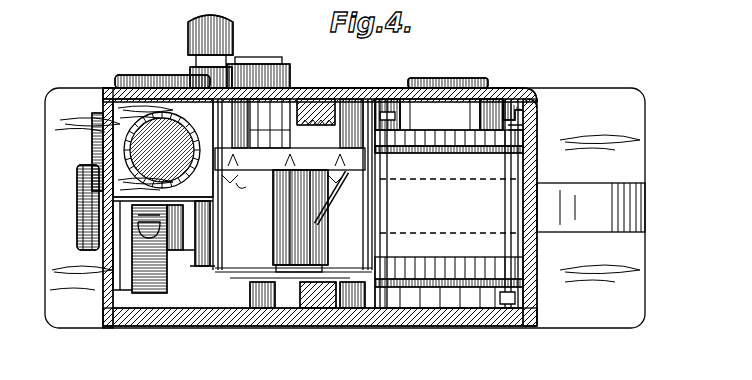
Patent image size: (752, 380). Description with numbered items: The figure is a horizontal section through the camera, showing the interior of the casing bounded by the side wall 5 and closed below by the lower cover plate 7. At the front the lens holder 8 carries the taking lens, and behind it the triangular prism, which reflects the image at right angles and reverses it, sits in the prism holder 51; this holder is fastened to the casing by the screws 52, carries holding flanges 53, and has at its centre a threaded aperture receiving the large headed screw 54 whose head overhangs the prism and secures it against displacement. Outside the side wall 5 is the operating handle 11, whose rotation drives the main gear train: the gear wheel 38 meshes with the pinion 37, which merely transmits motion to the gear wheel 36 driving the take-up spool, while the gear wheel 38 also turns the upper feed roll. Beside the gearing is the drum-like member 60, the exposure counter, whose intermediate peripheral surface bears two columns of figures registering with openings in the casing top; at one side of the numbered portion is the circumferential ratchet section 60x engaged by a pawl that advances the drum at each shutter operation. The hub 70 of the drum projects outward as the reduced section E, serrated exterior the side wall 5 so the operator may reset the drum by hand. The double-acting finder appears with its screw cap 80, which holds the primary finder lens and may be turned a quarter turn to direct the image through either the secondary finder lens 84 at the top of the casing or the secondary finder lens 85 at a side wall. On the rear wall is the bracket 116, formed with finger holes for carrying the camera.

The side wall 5 is at (342, 88).
The lower cover plate 7 is at (383, 318).
The lens holder 8 is at (77, 187).
The operating handle 11 is at (192, 63).
The gear wheel 36 is at (523, 92).
The pinion 37 is at (506, 100).
The gear wheel 38 is at (388, 112).
The prism holder 51 is at (290, 159).
The screws 52 is at (348, 188).
The holding flanges 53 is at (195, 262).
The large headed screw 54 is at (283, 276).
The drum-like member 60 is at (449, 203).
The circumferential ratchet section 60x is at (524, 137).
The hub 70 is at (440, 114).
The screw cap 80 is at (95, 126).
The secondary finder lens 84 is at (184, 138).
The secondary finder lens 85 is at (128, 77).
The bracket 116 is at (638, 205).
The reduced section E is at (472, 88).